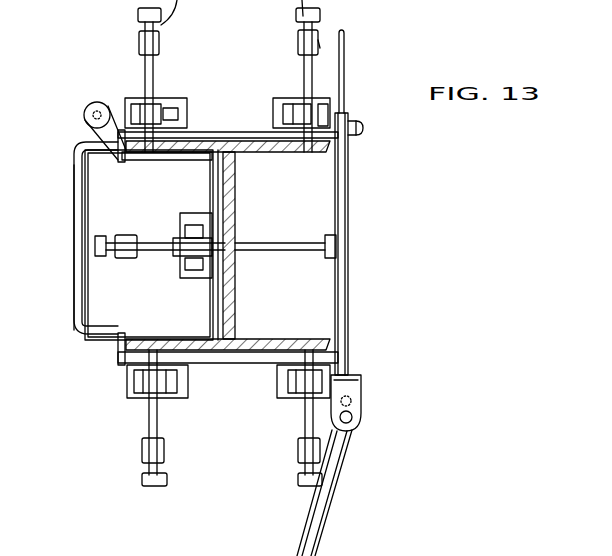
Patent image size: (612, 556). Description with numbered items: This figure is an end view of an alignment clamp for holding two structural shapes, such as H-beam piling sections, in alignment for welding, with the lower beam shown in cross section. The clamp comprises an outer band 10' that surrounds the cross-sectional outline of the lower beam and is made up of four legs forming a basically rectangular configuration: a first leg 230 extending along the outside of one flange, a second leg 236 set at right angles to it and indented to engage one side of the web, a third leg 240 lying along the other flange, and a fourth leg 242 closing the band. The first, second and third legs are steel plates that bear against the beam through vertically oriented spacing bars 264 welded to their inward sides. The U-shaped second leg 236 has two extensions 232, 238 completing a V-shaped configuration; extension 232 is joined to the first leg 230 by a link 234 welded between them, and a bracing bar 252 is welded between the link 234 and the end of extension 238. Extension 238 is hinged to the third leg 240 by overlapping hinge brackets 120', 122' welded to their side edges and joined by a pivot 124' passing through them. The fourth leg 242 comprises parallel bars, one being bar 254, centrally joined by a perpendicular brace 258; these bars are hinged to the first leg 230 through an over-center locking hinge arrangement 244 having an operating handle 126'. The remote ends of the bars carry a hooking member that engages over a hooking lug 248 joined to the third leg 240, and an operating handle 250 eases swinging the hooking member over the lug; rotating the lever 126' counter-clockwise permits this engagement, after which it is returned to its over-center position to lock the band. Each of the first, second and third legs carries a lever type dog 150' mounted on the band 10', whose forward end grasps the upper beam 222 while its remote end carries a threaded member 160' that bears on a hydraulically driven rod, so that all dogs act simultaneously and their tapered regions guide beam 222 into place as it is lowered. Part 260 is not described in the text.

The outer band 10' is at (226, 52).
The hinge bracket 120' is at (54, 225).
The hinge bracket 122' is at (115, 115).
The pivot 124' is at (80, 126).
The operating handle 126' is at (352, 493).
The lever type dog 150' is at (196, 243).
The threaded member 160' is at (354, 28).
The beam 222 is at (243, 300).
The first leg 230 is at (230, 360).
The extension 232 is at (138, 333).
The link 234 is at (118, 358).
The second leg 236 is at (212, 303).
The extension 238 is at (138, 160).
The third leg 240 is at (221, 134).
The fourth leg 242 is at (352, 327).
The over-center locking hinge arrangement 244 is at (397, 420).
The hooking lug 248 is at (364, 131).
The operating handle 250 is at (344, 62).
The bracing bar 252 is at (72, 243).
The bar 254 is at (343, 283).
The perpendicular brace 258 is at (338, 252).
The cross rod 260 is at (295, 245).
The bar 264 is at (279, 149).